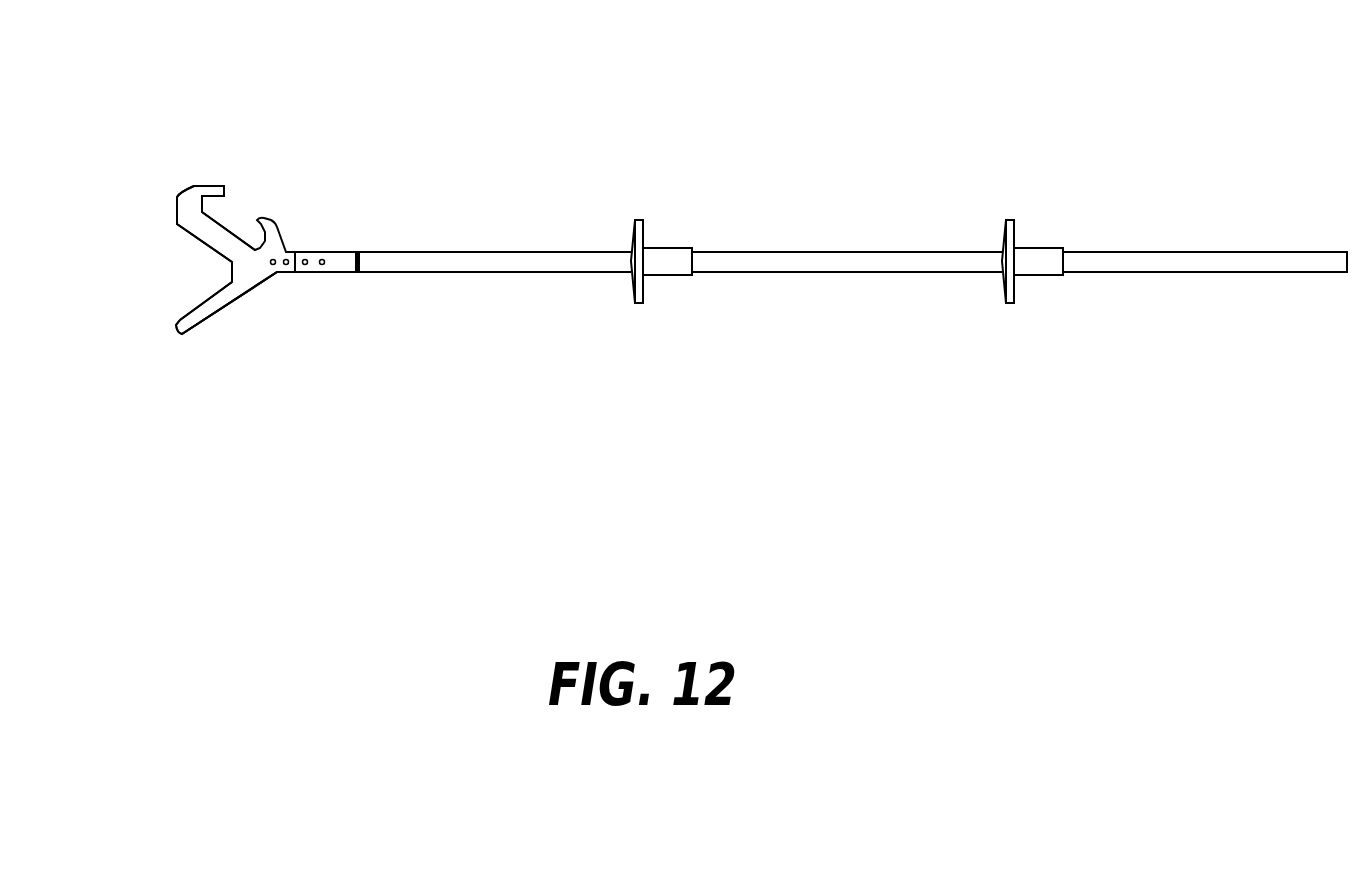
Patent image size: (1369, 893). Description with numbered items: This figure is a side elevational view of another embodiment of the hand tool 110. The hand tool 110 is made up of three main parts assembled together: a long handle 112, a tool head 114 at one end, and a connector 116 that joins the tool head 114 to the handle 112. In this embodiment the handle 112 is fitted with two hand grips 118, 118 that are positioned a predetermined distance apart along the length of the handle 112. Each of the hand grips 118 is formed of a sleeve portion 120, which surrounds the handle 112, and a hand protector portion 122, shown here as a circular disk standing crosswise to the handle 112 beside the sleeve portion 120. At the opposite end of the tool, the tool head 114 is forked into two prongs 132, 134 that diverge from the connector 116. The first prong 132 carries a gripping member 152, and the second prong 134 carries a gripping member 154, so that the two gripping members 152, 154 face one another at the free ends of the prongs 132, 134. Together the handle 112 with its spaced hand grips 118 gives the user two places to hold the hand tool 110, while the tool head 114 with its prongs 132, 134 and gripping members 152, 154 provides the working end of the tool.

The hand tool 110 is at (121, 181).
The handle 112 is at (871, 278).
The tool head 114 is at (230, 304).
The connector 116 is at (333, 278).
The hand grip 118 is at (665, 277).
The sleeve portion 120 is at (677, 248).
The hand protector portion 122 is at (640, 220).
The prong 132 is at (194, 233).
The prong 134 is at (189, 314).
The gripping member 152 is at (186, 229).
The gripping member 154 is at (185, 313).